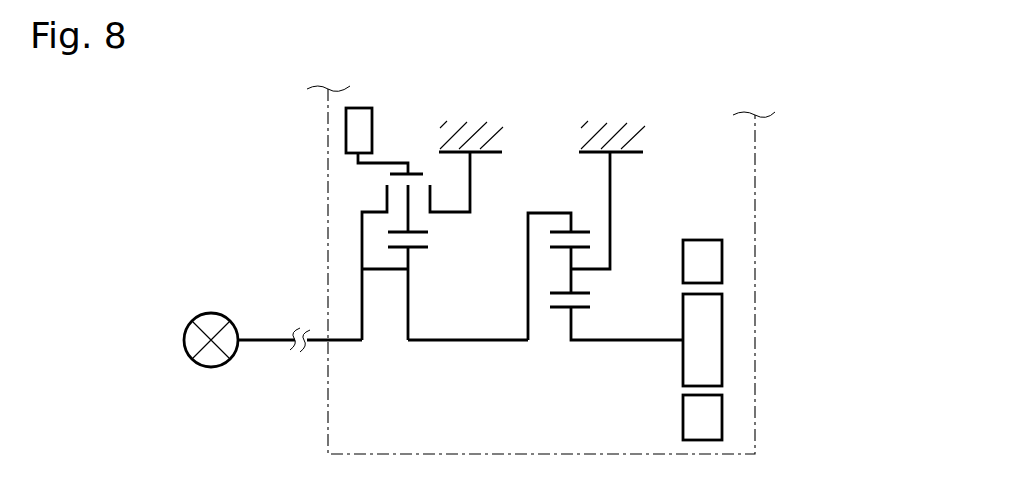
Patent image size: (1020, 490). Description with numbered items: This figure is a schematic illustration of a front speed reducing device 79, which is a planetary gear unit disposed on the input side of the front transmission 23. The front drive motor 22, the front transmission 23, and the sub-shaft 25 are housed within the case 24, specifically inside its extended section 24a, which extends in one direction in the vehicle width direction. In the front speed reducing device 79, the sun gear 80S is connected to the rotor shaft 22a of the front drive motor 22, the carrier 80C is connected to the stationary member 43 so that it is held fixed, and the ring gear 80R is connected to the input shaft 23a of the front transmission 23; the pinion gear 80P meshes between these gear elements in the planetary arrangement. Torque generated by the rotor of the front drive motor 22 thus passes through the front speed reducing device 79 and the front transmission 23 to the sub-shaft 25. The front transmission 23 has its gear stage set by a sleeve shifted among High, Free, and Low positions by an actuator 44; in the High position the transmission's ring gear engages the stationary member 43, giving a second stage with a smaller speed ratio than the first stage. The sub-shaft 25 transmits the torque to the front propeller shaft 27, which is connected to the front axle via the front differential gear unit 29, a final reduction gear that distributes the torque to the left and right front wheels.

The front drive motor 22 is at (722, 267).
The rotor shaft 22a is at (707, 345).
The front transmission 23 is at (398, 350).
The input shaft 23a is at (463, 344).
The case 24 is at (757, 197).
The extended section 24a is at (757, 410).
The sub-shaft 25 is at (345, 343).
The front propeller shaft 27 is at (267, 335).
The front differential gear unit 29 is at (207, 310).
The stationary member 43 is at (642, 142).
The actuator 44 is at (358, 129).
The front speed reducing device 79 is at (557, 348).
The ring gear 80R is at (580, 228).
The carrier 80C is at (612, 215).
The pinion gear 80P is at (572, 283).
The sun gear 80S is at (580, 307).